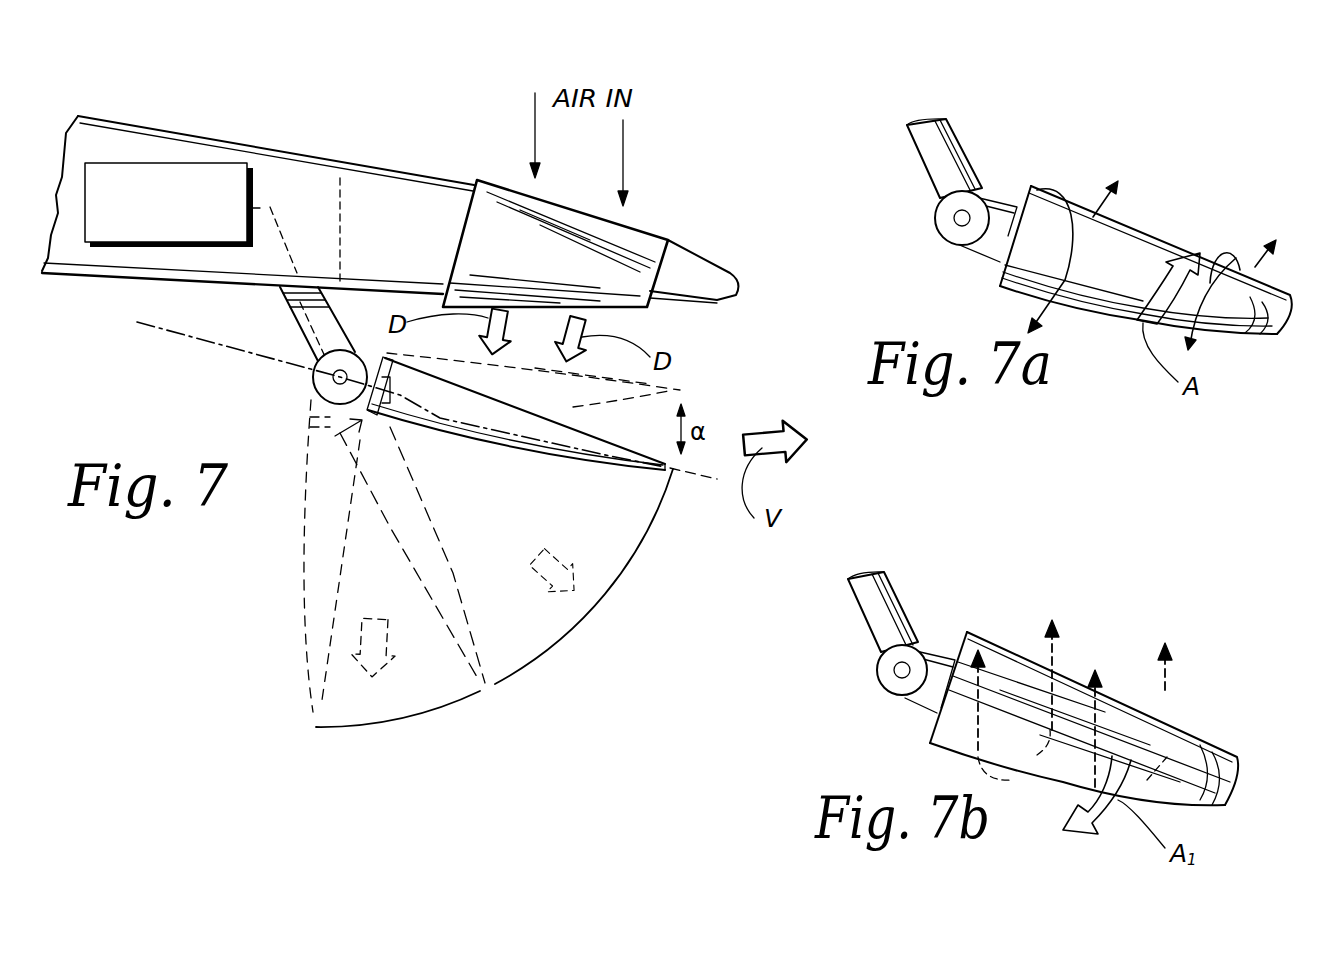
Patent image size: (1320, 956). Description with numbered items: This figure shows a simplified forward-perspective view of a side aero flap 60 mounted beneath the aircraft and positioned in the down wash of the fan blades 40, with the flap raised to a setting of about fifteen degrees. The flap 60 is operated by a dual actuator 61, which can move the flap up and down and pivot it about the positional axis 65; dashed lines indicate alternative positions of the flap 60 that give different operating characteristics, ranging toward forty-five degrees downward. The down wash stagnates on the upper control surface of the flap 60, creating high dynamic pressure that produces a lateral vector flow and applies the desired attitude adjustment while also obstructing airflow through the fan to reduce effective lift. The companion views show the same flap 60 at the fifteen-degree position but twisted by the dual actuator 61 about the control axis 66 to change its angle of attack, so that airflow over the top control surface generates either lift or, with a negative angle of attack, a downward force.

In FIG. 7, the fan blades 40 is at (620, 248).
In FIG. 7, the side aero flap 60 is at (517, 443).
In FIG. 7A, the side aero flap 60 is at (1145, 233).
In FIG. 7, the dual actuator 61 is at (221, 170).
In FIG. 7, the positional axis 65 is at (313, 376).
In FIG. 7, the control axis 66 is at (468, 410).
In FIG. 7A, the control axis 66 is at (1041, 195).